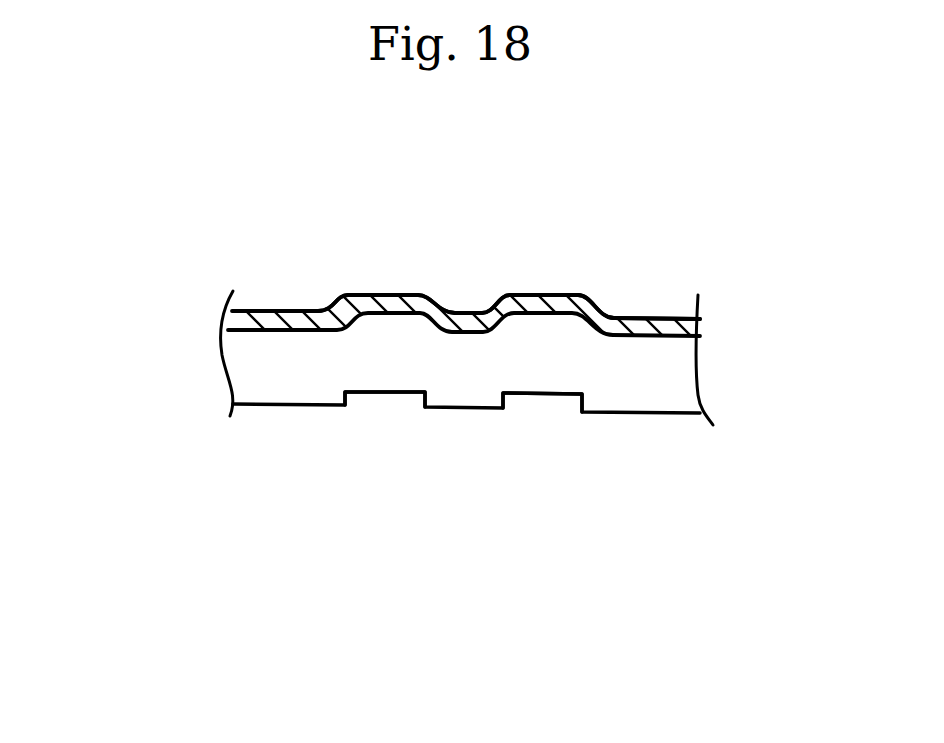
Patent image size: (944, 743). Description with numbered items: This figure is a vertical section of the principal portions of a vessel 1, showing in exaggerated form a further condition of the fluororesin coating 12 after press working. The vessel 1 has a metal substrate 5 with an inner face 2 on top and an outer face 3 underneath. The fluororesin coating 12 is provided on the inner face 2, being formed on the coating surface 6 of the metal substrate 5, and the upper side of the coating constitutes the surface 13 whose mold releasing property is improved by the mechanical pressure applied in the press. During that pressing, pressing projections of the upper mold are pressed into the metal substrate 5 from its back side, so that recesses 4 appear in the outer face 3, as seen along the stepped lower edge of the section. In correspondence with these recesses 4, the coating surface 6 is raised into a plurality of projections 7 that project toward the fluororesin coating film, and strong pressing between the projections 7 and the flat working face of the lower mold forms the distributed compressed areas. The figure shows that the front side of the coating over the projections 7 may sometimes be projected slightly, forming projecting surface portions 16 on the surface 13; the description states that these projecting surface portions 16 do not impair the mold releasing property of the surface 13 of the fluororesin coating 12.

The vessel 1 is at (466, 402).
The inner face 2 is at (515, 226).
The outer face 3 is at (518, 437).
The recesses 4 is at (386, 394).
The metal substrate 5 is at (388, 358).
The coating surface 6 is at (624, 332).
The projections 7 is at (552, 298).
The fluororesin coating 12 is at (700, 306).
The surface 13 is at (540, 295).
The projecting surface portions 16 is at (519, 234).